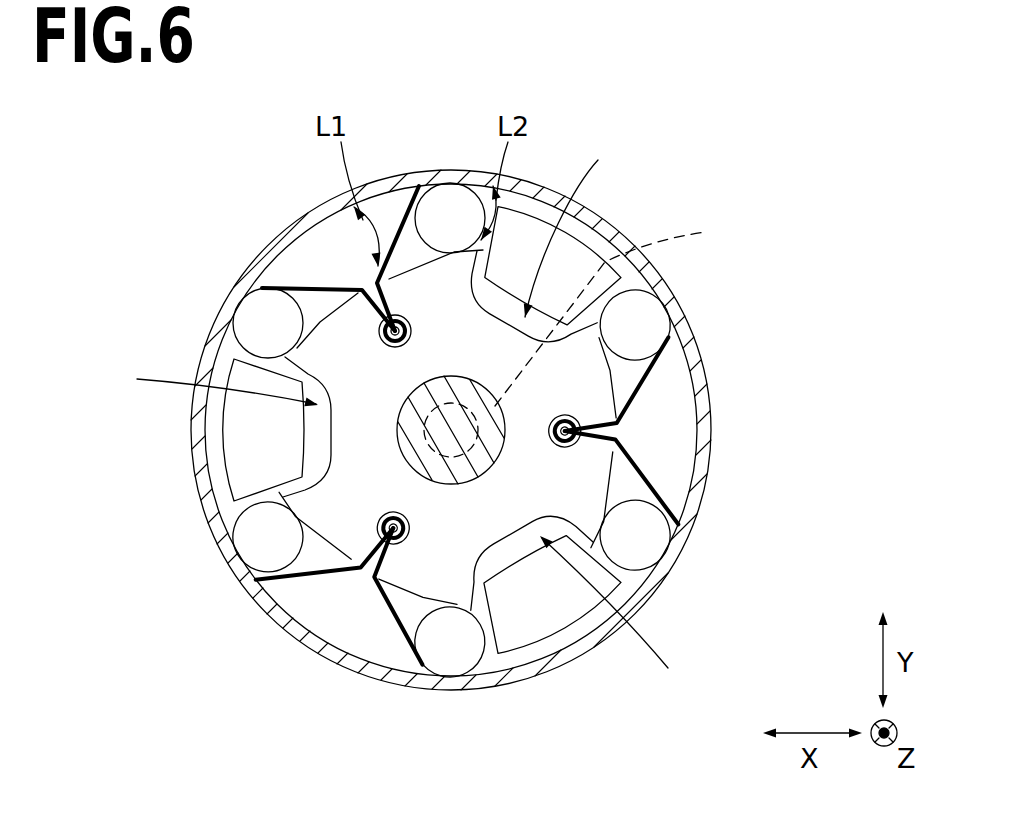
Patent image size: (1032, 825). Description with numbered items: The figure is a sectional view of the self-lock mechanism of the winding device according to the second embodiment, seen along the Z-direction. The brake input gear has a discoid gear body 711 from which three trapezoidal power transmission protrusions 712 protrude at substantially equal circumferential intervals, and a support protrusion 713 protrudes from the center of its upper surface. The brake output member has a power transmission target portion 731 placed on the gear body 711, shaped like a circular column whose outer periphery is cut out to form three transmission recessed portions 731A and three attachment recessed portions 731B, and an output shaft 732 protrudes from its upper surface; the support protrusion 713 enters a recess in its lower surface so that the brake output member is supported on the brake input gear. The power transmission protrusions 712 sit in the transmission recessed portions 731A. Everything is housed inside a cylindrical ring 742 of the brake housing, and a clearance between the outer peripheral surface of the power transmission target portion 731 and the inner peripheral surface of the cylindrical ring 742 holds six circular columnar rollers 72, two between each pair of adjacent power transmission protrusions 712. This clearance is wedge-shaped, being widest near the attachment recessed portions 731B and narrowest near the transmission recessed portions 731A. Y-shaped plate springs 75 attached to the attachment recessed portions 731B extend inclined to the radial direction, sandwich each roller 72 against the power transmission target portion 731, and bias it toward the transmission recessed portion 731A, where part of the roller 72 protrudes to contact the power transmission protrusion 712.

The roller 72 is at (452, 203).
The plate spring 75 is at (342, 283).
The gear body 711 is at (337, 238).
The power transmission protrusion 712 is at (247, 428).
The support protrusion 713 is at (627, 311).
The power transmission target portion 731 is at (507, 387).
The transmission recessed portion 731A is at (398, 412).
The attachment recessed portion 731B is at (394, 318).
The output shaft 732 is at (497, 412).
The cylindrical ring 742 is at (705, 378).